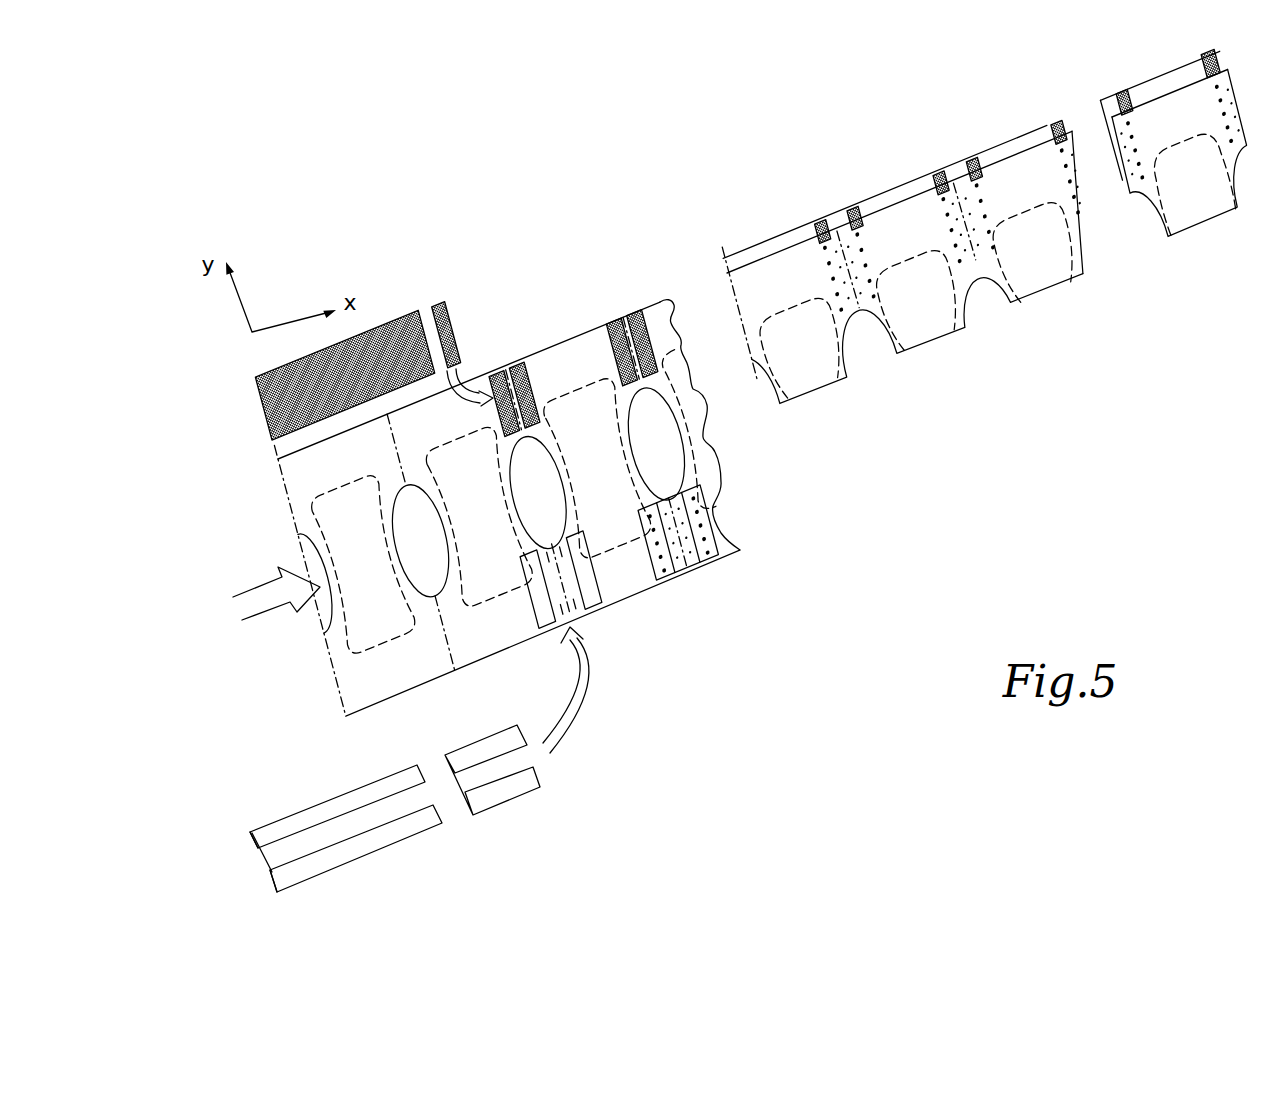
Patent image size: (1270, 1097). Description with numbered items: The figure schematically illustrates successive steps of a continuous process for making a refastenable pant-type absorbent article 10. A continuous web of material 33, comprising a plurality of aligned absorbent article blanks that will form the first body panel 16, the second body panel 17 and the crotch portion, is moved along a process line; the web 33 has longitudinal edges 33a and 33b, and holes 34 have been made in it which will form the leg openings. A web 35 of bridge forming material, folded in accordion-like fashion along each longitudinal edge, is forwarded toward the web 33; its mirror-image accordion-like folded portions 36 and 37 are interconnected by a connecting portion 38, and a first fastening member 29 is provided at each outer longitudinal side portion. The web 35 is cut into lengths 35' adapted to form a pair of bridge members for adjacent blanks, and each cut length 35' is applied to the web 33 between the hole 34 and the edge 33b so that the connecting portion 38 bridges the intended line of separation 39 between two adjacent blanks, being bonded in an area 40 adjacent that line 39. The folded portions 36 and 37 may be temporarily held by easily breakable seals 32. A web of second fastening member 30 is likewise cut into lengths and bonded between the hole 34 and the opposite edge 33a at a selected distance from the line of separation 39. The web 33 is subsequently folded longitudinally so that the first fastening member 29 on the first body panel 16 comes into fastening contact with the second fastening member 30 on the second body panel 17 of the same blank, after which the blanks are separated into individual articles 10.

The pant-type absorbent article 10 is at (1163, 257).
The first body panel 16 is at (617, 587).
The second body panel 17 is at (565, 357).
The first fastening member 29 is at (328, 813).
The second fastening member 30 is at (452, 328).
The easily breakable seals 32 is at (698, 528).
The continuous web of material 33 is at (352, 677).
The longitudinal edge 33a is at (480, 367).
The longitudinal edge 33b is at (510, 650).
The holes 34 is at (664, 449).
The web of bridge forming material 35 is at (332, 846).
The cut lengths of bridge forming material 35' is at (609, 684).
The accordion-like folded portion 36 is at (258, 845).
The accordion-like folded portion 37 is at (267, 882).
The connecting portion 38 is at (268, 860).
The intended line of separation 39 is at (400, 450).
The bonding area 40 is at (697, 567).